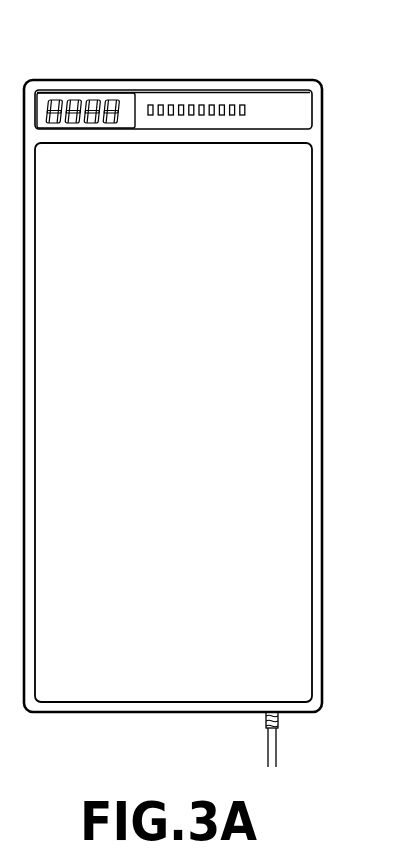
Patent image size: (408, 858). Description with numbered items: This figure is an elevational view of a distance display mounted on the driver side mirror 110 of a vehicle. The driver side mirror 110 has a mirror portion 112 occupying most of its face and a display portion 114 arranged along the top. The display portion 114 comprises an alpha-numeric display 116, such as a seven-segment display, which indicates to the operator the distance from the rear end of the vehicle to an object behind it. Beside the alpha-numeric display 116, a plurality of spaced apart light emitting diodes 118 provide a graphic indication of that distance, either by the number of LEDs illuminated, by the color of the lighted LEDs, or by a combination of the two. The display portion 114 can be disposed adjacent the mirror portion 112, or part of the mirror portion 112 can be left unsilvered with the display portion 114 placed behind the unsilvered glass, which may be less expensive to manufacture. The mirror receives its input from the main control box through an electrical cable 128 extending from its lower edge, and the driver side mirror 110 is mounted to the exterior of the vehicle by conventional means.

The driver side mirror 110 is at (187, 64).
The mirror portion 112 is at (188, 303).
The display portion 114 is at (261, 103).
The alpha-numeric display 116 is at (77, 100).
The light emitting diodes 118 is at (192, 103).
The electrical cable 128 is at (275, 747).